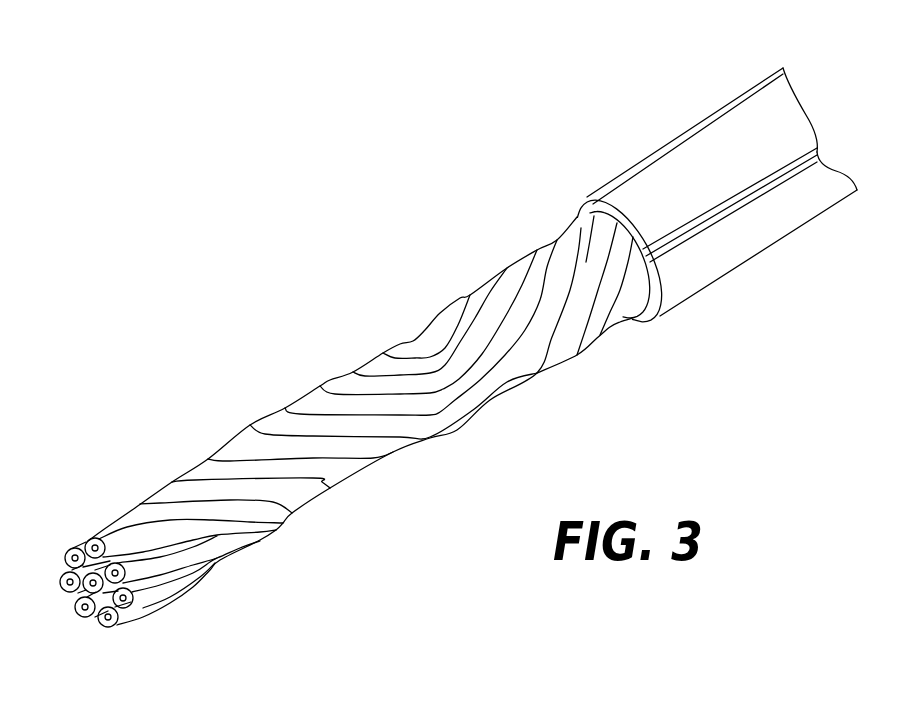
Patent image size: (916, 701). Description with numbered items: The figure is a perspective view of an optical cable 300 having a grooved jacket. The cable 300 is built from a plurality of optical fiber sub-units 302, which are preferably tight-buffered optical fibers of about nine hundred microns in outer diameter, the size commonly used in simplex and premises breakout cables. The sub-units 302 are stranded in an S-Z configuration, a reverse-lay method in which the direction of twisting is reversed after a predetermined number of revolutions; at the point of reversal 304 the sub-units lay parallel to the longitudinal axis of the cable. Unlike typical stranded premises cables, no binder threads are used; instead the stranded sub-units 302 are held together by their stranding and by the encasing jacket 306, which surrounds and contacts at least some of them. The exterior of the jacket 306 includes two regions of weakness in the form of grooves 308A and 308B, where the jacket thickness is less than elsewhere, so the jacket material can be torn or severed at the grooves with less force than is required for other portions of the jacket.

The optical cable 300 is at (472, 167).
The optical fiber sub-units 302 is at (213, 550).
The point of reversal 304 is at (426, 327).
The jacket 306 is at (788, 212).
The groove 308A is at (612, 167).
The groove 308B is at (702, 233).